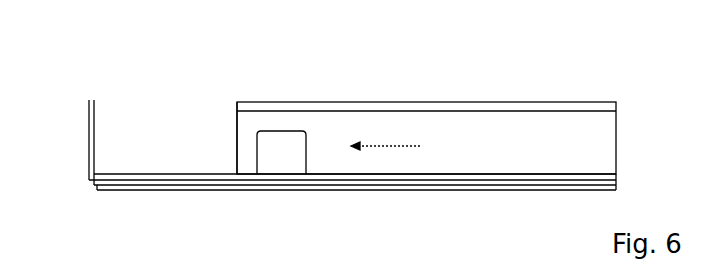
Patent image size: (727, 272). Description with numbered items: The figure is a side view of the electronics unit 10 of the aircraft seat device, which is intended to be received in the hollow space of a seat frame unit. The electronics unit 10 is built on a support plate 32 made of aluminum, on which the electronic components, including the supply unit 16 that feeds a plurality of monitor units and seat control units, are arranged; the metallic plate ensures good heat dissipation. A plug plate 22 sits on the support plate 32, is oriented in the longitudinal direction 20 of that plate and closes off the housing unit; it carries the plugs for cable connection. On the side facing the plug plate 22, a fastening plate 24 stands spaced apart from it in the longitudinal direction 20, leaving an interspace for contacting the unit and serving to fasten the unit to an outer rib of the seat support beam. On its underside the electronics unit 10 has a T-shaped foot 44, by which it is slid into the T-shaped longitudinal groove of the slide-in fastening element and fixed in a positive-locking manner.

The electronics unit 10 is at (431, 94).
The supply unit 16 is at (282, 155).
The longitudinal direction 20 is at (383, 145).
The plug plate 22 is at (237, 133).
The fastening plate 24 is at (92, 98).
The support plate 32 is at (183, 191).
The T-shaped foot 44 is at (396, 191).